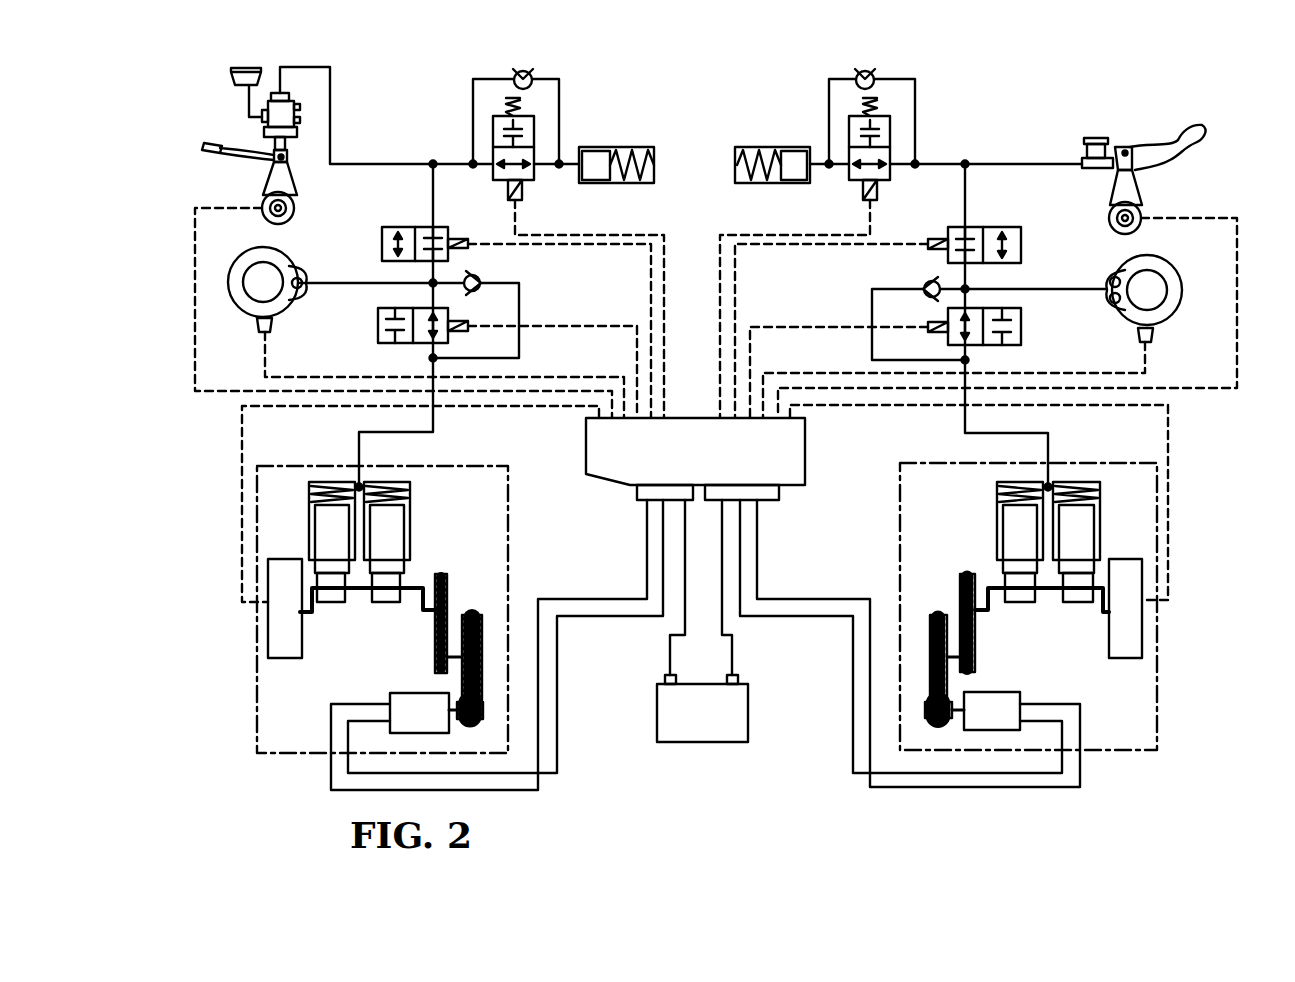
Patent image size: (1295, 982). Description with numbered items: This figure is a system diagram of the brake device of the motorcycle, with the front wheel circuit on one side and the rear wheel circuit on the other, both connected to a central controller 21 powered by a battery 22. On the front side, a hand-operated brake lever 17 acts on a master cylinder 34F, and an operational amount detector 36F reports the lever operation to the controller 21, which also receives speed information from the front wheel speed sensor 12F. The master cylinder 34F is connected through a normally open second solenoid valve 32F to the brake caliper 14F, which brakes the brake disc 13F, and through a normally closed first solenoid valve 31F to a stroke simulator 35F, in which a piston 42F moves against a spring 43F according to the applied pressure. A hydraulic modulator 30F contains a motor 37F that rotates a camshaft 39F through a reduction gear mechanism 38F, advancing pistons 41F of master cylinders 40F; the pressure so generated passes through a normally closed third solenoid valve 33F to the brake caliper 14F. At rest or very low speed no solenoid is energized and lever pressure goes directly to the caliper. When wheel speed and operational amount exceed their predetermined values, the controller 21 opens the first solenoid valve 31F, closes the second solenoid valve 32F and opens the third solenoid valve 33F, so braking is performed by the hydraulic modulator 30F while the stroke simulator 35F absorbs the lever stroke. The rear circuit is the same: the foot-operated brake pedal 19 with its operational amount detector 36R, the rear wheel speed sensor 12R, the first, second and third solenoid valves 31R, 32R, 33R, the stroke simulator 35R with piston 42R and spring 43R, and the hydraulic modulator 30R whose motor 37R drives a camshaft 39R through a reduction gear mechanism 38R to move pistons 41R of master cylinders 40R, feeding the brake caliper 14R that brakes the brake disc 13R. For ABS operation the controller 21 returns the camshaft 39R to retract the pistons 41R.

The front wheel speed sensor 12F is at (1152, 340).
The rear wheel speed sensor 12R is at (258, 325).
The brake disc 13F is at (1172, 285).
The brake disc 13R is at (240, 280).
The brake caliper 14F is at (1110, 270).
The brake caliper 14R is at (300, 268).
The brake lever 17 is at (1185, 130).
The brake pedal 19 is at (210, 140).
The controller 21 is at (812, 455).
The battery 22 is at (706, 742).
The hydraulic modulator 30F is at (995, 596).
The hydraulic modulator 30R is at (417, 598).
The first solenoid valve 31F is at (885, 183).
The first solenoid valve 31R is at (500, 183).
The second solenoid valve 32F is at (992, 227).
The second solenoid valve 32R is at (400, 227).
The third solenoid valve 33F is at (990, 345).
The third solenoid valve 33R is at (405, 345).
The master cylinder 34F is at (1084, 150).
The stroke simulator 35F is at (779, 157).
The stroke simulator 35R is at (620, 157).
The operational amount detector 36F is at (1143, 212).
The operational amount detector 36R is at (260, 205).
The motor 37F is at (985, 692).
The motor 37R is at (405, 693).
The reduction gear mechanism 38F is at (975, 655).
The reduction gear mechanism 38R is at (437, 655).
The camshaft 39F is at (1052, 598).
The camshaft 39R is at (362, 600).
The master cylinders 40F is at (1012, 484).
The master cylinders 40R is at (328, 484).
The pistons 41F is at (1012, 533).
The pistons 41R is at (322, 543).
The piston 42F is at (795, 182).
The piston 42R is at (592, 182).
The spring 43F is at (755, 183).
The spring 43R is at (632, 183).